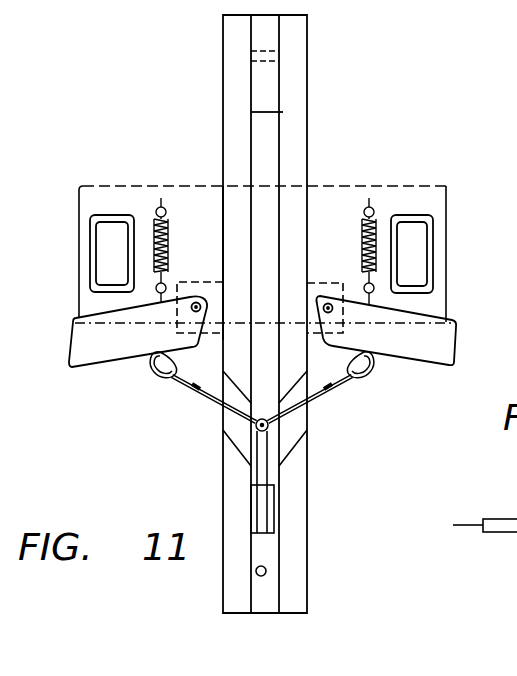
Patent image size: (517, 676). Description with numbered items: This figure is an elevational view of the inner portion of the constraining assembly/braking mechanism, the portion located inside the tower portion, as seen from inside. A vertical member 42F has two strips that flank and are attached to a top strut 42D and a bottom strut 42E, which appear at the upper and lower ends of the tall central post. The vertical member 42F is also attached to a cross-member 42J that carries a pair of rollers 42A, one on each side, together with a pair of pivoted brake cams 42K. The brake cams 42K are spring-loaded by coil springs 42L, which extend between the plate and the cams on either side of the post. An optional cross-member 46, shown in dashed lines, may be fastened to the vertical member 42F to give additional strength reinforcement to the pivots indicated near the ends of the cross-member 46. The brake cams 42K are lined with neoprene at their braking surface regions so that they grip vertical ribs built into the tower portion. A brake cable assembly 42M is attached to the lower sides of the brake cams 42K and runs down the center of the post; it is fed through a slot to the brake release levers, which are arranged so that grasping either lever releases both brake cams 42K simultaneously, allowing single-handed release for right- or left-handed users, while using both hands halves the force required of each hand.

The rollers 42A is at (108, 242).
The top strut 42D is at (266, 83).
The bottom strut 42E is at (258, 555).
The vertical member 42F is at (292, 83).
The cross-member 42J is at (358, 254).
The brake cams 42K is at (104, 346).
The coil springs 42L is at (168, 214).
The brake cable assembly 42M is at (278, 508).
The cross-member 46 is at (236, 303).